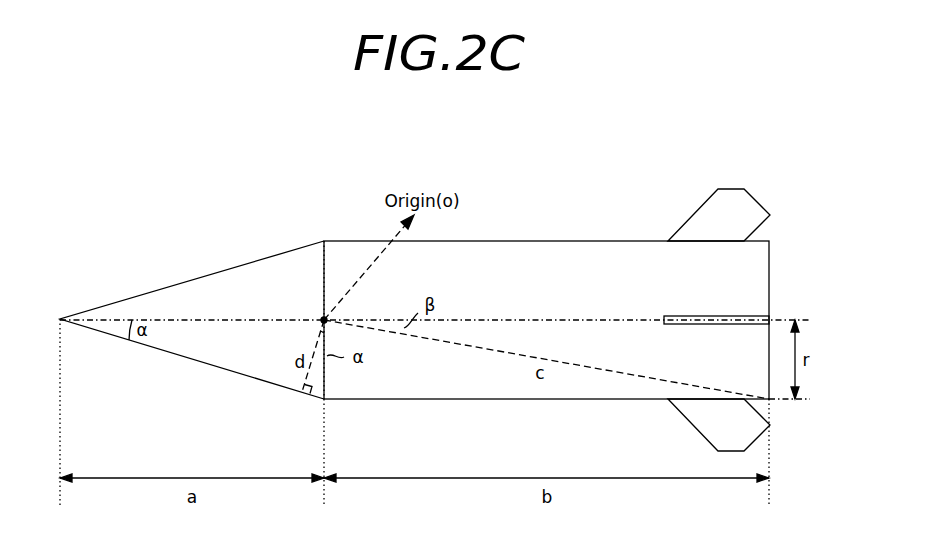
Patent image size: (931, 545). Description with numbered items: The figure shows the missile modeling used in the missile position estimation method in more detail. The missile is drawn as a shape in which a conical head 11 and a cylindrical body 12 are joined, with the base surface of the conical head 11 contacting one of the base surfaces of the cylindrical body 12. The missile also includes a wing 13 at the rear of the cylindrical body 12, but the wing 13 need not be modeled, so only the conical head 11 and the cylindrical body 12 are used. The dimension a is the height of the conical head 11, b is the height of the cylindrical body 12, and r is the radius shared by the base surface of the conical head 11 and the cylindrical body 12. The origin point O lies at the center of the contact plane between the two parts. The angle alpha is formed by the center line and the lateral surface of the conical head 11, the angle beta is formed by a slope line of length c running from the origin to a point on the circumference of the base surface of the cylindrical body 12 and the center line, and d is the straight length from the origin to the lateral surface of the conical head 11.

The conical head 11 is at (252, 262).
The cylindrical body 12 is at (576, 241).
The wing 13 is at (748, 207).